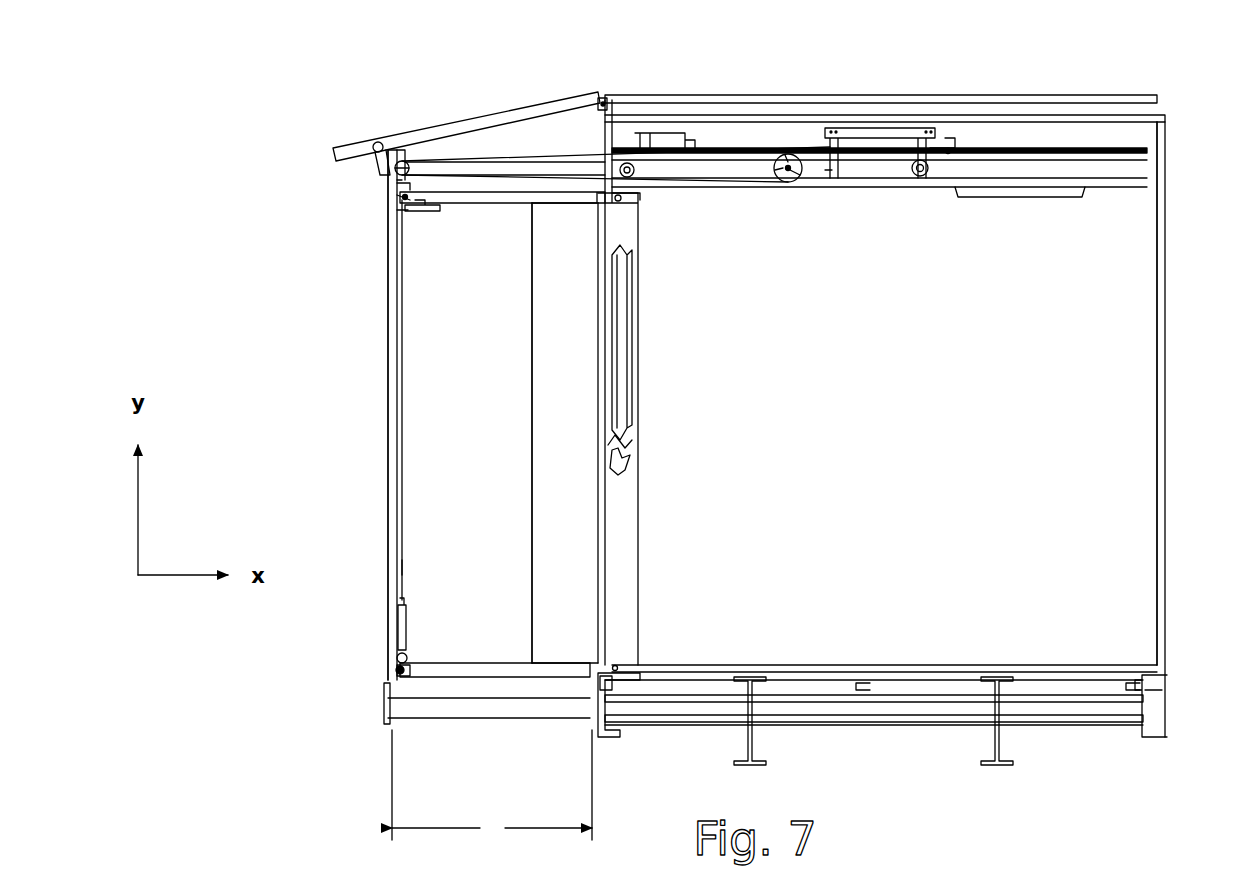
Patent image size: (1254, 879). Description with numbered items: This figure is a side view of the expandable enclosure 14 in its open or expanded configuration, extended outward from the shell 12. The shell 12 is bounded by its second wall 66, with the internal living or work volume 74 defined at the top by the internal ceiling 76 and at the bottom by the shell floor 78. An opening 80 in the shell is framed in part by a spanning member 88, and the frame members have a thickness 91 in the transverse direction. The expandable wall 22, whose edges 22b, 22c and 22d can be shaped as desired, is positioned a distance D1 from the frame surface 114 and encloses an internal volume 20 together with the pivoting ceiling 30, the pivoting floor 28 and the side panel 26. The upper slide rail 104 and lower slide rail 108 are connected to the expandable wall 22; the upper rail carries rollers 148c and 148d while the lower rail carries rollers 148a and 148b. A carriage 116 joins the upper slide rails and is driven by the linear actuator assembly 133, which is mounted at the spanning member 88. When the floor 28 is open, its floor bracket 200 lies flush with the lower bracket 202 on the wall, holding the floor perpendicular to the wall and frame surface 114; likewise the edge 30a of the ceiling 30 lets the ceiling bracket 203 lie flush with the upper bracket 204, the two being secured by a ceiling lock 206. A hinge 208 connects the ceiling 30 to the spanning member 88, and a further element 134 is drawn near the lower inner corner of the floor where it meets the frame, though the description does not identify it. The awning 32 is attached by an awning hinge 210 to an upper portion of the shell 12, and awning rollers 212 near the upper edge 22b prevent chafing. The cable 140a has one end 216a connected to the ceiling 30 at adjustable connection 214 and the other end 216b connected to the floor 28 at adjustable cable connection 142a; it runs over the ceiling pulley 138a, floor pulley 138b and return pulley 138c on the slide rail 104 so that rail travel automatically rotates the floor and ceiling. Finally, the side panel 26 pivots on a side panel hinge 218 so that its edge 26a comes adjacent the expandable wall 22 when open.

The shell 12 is at (1172, 162).
The expandable enclosure 14 is at (383, 452).
The internal volume 20 is at (465, 432).
The expandable wall 22 is at (388, 405).
The upper edge of expandable wall 22b is at (405, 150).
The expandable wall edge 22c is at (575, 205).
The expandable wall edge 22d is at (598, 650).
The side panel 26 is at (565, 433).
The edge of side panel 26a is at (532, 440).
The pivoting floor 28 is at (492, 677).
The pivoting ceiling 30 is at (545, 195).
The edge of pivoting ceiling 30a is at (443, 193).
The awning 32 is at (455, 130).
The second wall 66 is at (1157, 320).
The internal living or work volume 74 is at (895, 455).
The internal ceiling 76 is at (1030, 197).
The shell floor 78 is at (1088, 665).
The opening 80 is at (626, 462).
The spanning member 88 is at (622, 205).
The thickness 91 is at (560, 527).
The upper slide rail 104 is at (597, 172).
The lower slide rail 108 is at (572, 718).
The frame surface 114 is at (605, 582).
The carriage 116 is at (945, 135).
The linear actuator assembly 133 is at (758, 142).
The lower pivot 134 is at (615, 665).
The ceiling pulley 138a is at (395, 152).
The floor pulley 138b is at (395, 165).
The return pulley 138c is at (800, 183).
The cable 140a is at (403, 522).
The adjustable cable connection 142a is at (406, 616).
The roller 148a is at (620, 723).
The roller 148b is at (885, 725).
The roller 148c is at (668, 180).
The roller 148d is at (922, 178).
The floor bracket 200 is at (406, 652).
The lower bracket 202 is at (400, 680).
The ceiling bracket 203 is at (422, 212).
The upper bracket 204 is at (390, 186).
The ceiling lock 206 is at (400, 212).
The hinge 208 is at (637, 195).
The awning hinge 210 is at (606, 98).
The awning roller 212 is at (377, 142).
The adjustable connection 214 is at (393, 196).
The cable end 216a is at (392, 183).
The cable end 216b is at (403, 565).
The side panel hinge 218 is at (625, 355).
The distance D1 is at (492, 786).